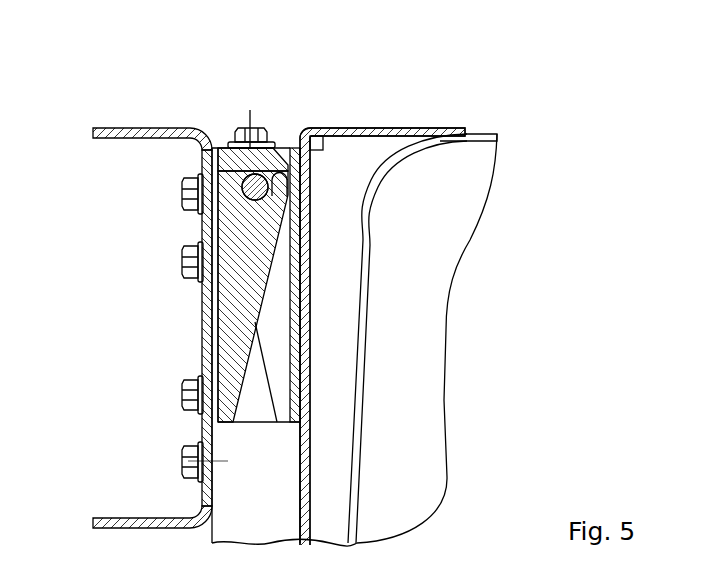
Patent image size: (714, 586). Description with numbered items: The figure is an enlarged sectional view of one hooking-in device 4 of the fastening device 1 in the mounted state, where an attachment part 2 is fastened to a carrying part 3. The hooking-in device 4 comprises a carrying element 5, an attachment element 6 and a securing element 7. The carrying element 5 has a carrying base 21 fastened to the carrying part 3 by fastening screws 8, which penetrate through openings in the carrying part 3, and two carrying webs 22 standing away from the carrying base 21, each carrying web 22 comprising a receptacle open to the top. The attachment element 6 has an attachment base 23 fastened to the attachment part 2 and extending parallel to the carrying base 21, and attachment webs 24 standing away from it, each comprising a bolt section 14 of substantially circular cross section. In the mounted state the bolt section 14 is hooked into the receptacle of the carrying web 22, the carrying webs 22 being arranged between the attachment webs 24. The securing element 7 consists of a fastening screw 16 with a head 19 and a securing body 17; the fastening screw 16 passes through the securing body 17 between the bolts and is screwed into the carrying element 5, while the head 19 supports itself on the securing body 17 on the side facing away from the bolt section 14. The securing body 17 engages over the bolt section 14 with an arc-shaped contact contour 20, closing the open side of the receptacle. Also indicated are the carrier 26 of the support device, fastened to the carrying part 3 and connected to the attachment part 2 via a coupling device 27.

The fastening device 1 is at (270, 248).
The attachment part 2 is at (484, 130).
The carrying part 3 is at (151, 126).
The hooking-in device 4 is at (286, 109).
The carrying element 5 is at (218, 300).
The attachment element 6 is at (303, 318).
The securing element 7 is at (220, 118).
The fastening screws 8 is at (182, 258).
The bolt section 14 is at (258, 192).
The fastening screw 16 is at (243, 124).
The securing body 17 is at (235, 160).
The head 19 is at (262, 128).
The contact contour 20 is at (247, 186).
The carrying base 21 is at (210, 331).
The carrying web 22 is at (232, 382).
The attachment base 23 is at (303, 288).
The attachment web 24 is at (280, 258).
The carrier 26 is at (235, 512).
The coupling device 27 is at (60, 8).